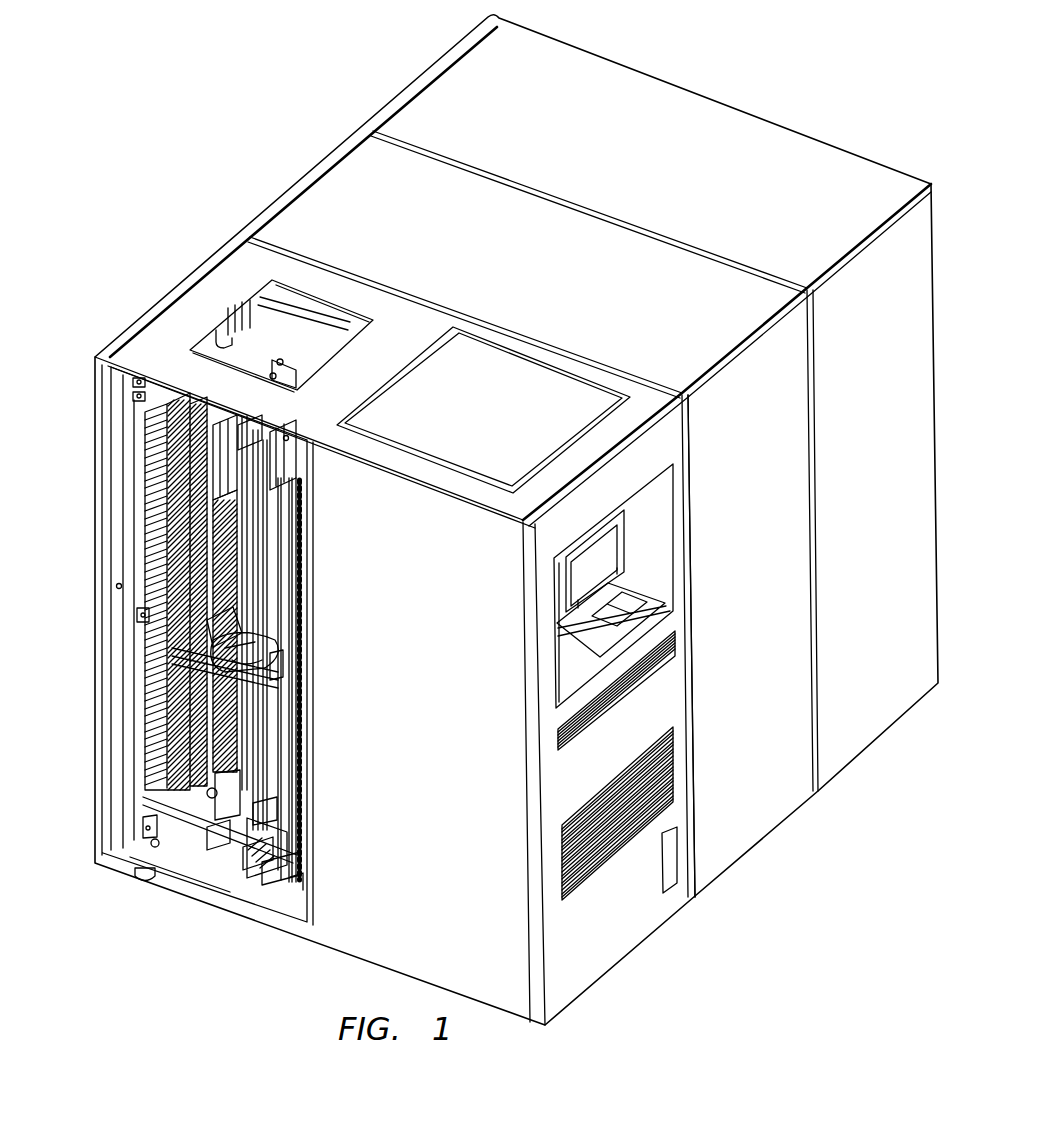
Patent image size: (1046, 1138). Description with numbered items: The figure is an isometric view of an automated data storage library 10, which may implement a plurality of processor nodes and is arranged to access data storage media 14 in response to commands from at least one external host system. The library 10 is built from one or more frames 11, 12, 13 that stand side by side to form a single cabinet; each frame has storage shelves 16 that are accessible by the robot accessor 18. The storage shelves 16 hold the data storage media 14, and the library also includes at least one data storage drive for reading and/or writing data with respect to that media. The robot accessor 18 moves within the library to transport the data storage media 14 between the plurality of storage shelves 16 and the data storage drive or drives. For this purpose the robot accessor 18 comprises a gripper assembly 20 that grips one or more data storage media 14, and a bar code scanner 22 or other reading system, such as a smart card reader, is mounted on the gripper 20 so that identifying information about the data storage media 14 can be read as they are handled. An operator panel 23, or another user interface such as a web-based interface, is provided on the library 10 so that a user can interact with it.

The automated data storage library 10 is at (251, 152).
The frame 11 is at (625, 947).
The frame 12 is at (758, 833).
The frame 13 is at (677, 95).
The data storage media 14 is at (143, 532).
The storage shelves 16 is at (105, 588).
The robot accessor 18 is at (230, 822).
The gripper assembly 20 is at (290, 702).
The bar code scanner 22 is at (263, 628).
The operator panel 23 is at (645, 613).